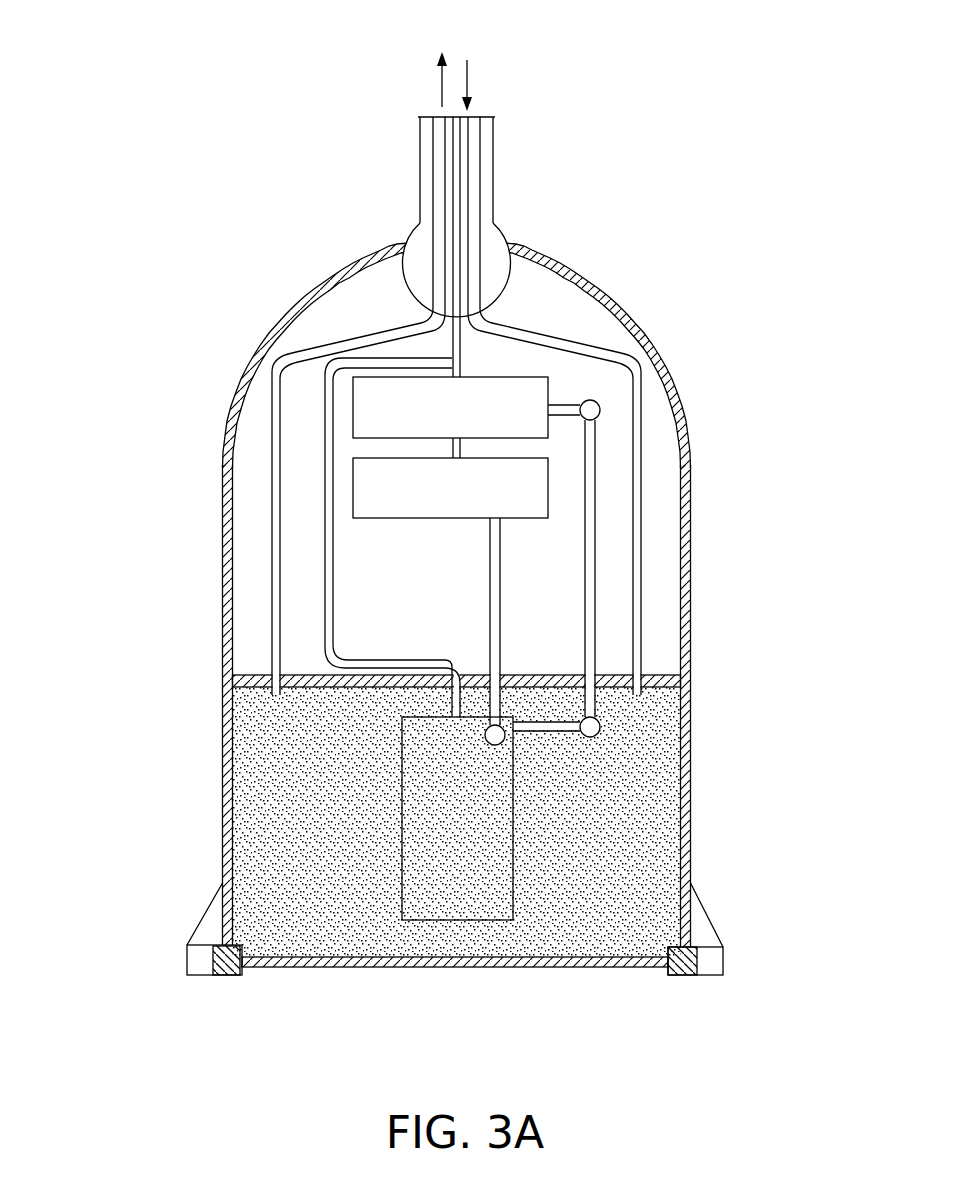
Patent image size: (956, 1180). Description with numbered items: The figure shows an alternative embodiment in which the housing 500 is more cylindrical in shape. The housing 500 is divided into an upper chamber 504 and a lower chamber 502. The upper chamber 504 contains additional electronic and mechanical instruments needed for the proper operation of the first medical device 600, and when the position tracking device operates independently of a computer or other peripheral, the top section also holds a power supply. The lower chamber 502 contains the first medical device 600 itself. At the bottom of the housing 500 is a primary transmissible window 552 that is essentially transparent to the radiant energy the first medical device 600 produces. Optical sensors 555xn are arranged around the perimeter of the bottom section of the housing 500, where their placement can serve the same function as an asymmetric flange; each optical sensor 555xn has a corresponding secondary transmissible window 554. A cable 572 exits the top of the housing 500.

The cable bundle / umbilical 572 is at (452, 113).
The upper chamber 504 is at (653, 408).
The housing 500 is at (690, 783).
The lower chamber 502 is at (658, 847).
The first medical device 600 is at (453, 900).
The primary transmissible window 552 is at (513, 976).
The secondary transmissible window 554 is at (202, 978).
The optical sensor 555xn is at (200, 940).